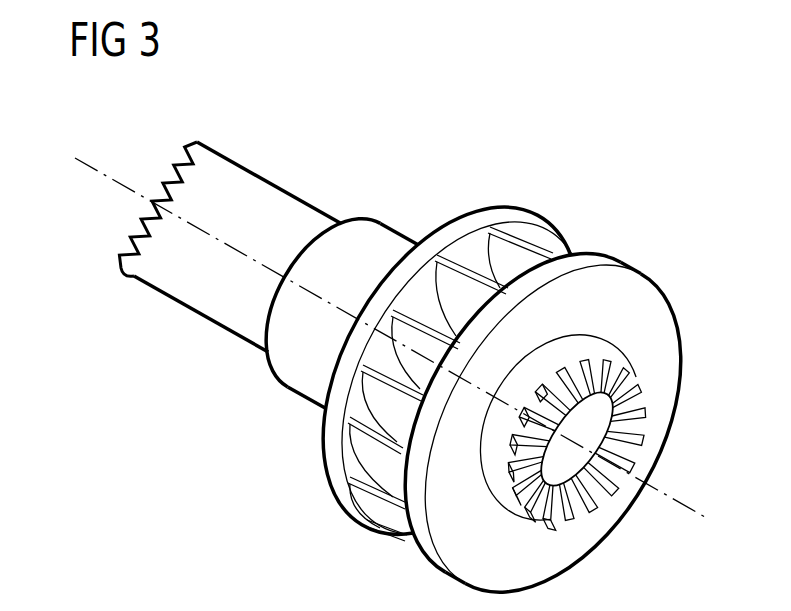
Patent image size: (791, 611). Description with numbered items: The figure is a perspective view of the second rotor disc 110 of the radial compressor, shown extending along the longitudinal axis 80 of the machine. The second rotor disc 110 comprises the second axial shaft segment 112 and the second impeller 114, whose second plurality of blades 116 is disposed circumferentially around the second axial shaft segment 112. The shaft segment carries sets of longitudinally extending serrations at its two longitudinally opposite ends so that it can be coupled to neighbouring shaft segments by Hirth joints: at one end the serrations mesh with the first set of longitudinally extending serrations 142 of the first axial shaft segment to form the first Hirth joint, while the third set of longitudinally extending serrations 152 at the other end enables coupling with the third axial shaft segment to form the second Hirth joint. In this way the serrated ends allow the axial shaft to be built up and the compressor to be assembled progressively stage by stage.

The longitudinal axis 80 is at (672, 496).
The second rotor disc 110 is at (491, 203).
The second axial shaft segment 112 is at (263, 202).
The second impeller 114 is at (647, 304).
The second plurality of blades 116 is at (450, 262).
The first set of longitudinally extending serrations 142 is at (178, 150).
The third set of longitudinally extending serrations 152 is at (633, 382).